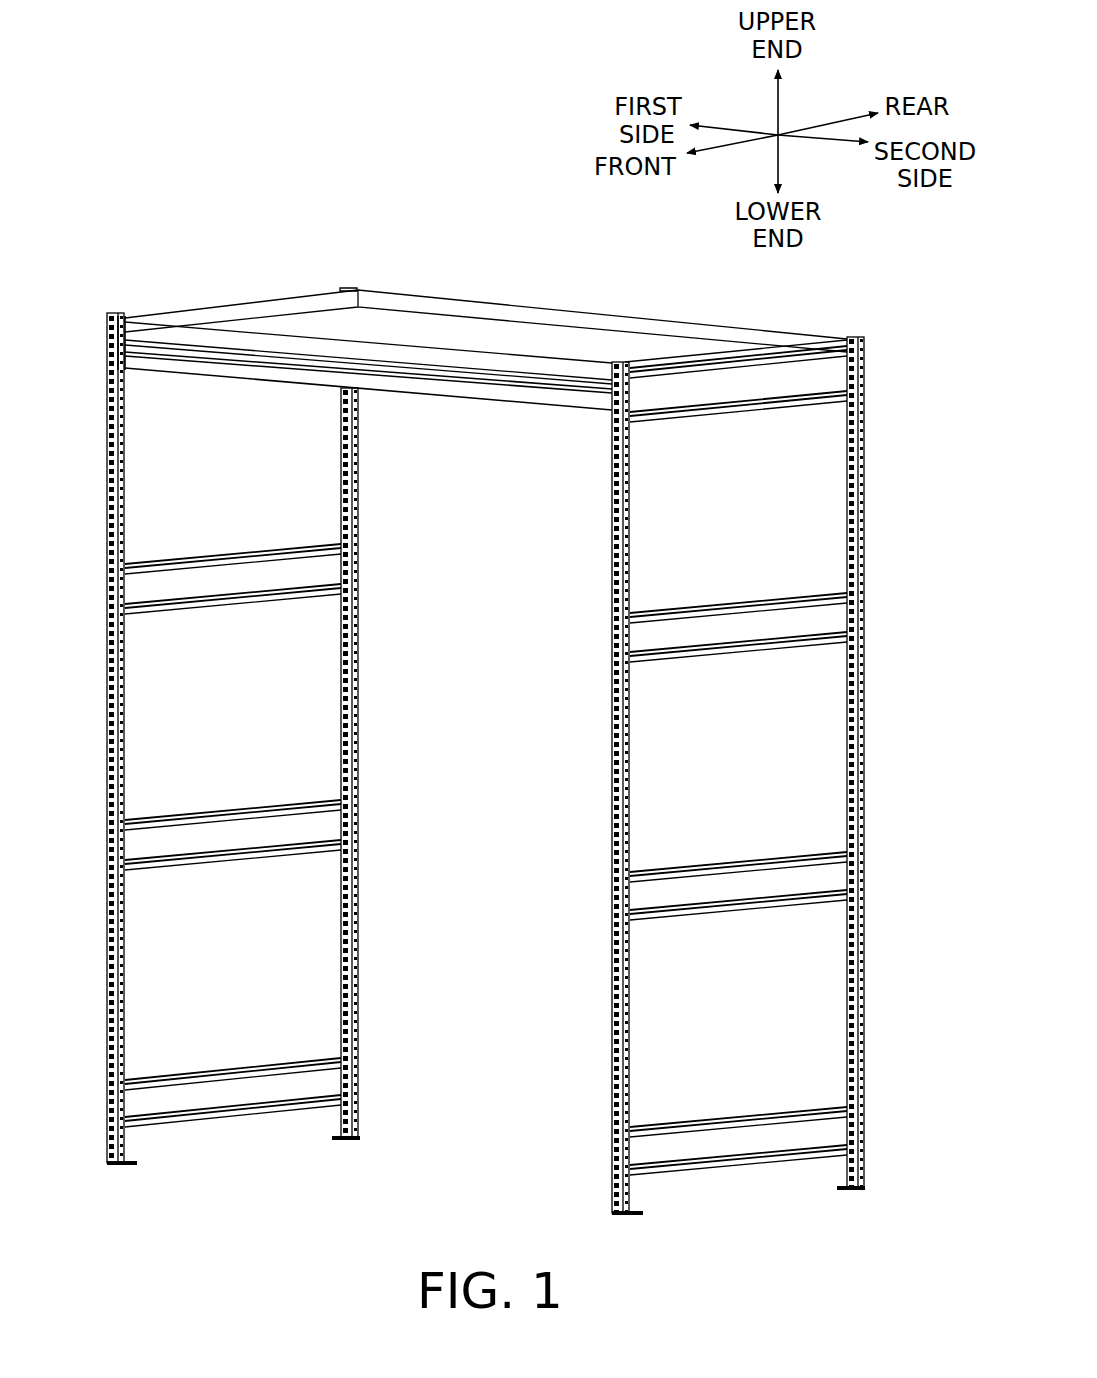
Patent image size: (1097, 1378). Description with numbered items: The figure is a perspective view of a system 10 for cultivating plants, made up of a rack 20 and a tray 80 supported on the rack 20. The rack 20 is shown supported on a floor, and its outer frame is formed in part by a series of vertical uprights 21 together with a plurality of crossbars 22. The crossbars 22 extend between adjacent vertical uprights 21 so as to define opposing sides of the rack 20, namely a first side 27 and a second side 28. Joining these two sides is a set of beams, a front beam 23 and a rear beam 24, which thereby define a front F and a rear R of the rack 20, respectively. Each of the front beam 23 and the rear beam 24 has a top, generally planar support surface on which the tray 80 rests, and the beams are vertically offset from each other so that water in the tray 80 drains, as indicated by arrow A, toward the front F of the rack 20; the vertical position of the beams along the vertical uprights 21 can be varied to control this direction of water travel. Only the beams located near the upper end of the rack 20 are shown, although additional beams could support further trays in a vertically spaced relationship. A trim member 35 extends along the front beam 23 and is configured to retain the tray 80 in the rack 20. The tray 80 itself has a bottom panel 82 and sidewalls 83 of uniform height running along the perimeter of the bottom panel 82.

The system 10 is at (125, 160).
The rack 20 is at (432, 1178).
The vertical uprights 21 is at (868, 718).
The crossbars 22 is at (720, 392).
The front beam 23 is at (497, 395).
The rear beam 24 is at (905, 342).
The first side 27 is at (95, 292).
The second side 28 is at (925, 1015).
The trim member 35 is at (137, 340).
The tray 80 is at (290, 322).
The bottom panel 82 is at (510, 325).
The sidewalls 83 is at (195, 315).
The arrow A is at (447, 158).
The front F is at (88, 625).
The rear R is at (920, 415).